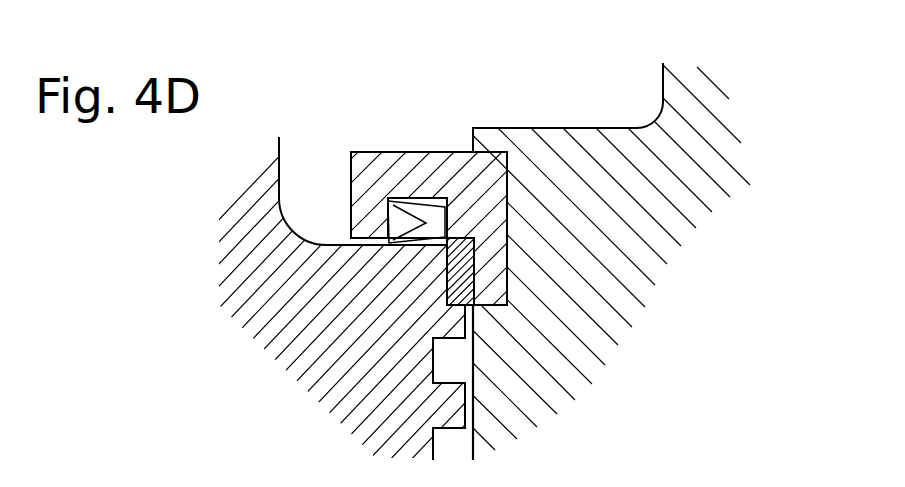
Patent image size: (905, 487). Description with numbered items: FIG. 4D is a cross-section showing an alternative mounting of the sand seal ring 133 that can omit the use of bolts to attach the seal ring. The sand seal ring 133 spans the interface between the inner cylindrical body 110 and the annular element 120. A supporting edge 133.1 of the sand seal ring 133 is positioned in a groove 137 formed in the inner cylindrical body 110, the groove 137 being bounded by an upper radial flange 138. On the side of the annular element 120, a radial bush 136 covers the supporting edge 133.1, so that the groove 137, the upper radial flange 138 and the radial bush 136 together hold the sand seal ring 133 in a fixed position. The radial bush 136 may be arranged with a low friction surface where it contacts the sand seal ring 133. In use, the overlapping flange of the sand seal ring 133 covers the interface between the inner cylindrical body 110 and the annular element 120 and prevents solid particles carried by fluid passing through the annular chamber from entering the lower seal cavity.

The inner cylindrical body 110 is at (607, 248).
The annular element 120 is at (333, 327).
The sand seal ring 133 is at (410, 170).
The supporting edge 133.1 is at (490, 247).
The radial bush 136 is at (460, 290).
The groove 137 is at (517, 198).
The upper radial flange 138 is at (486, 137).